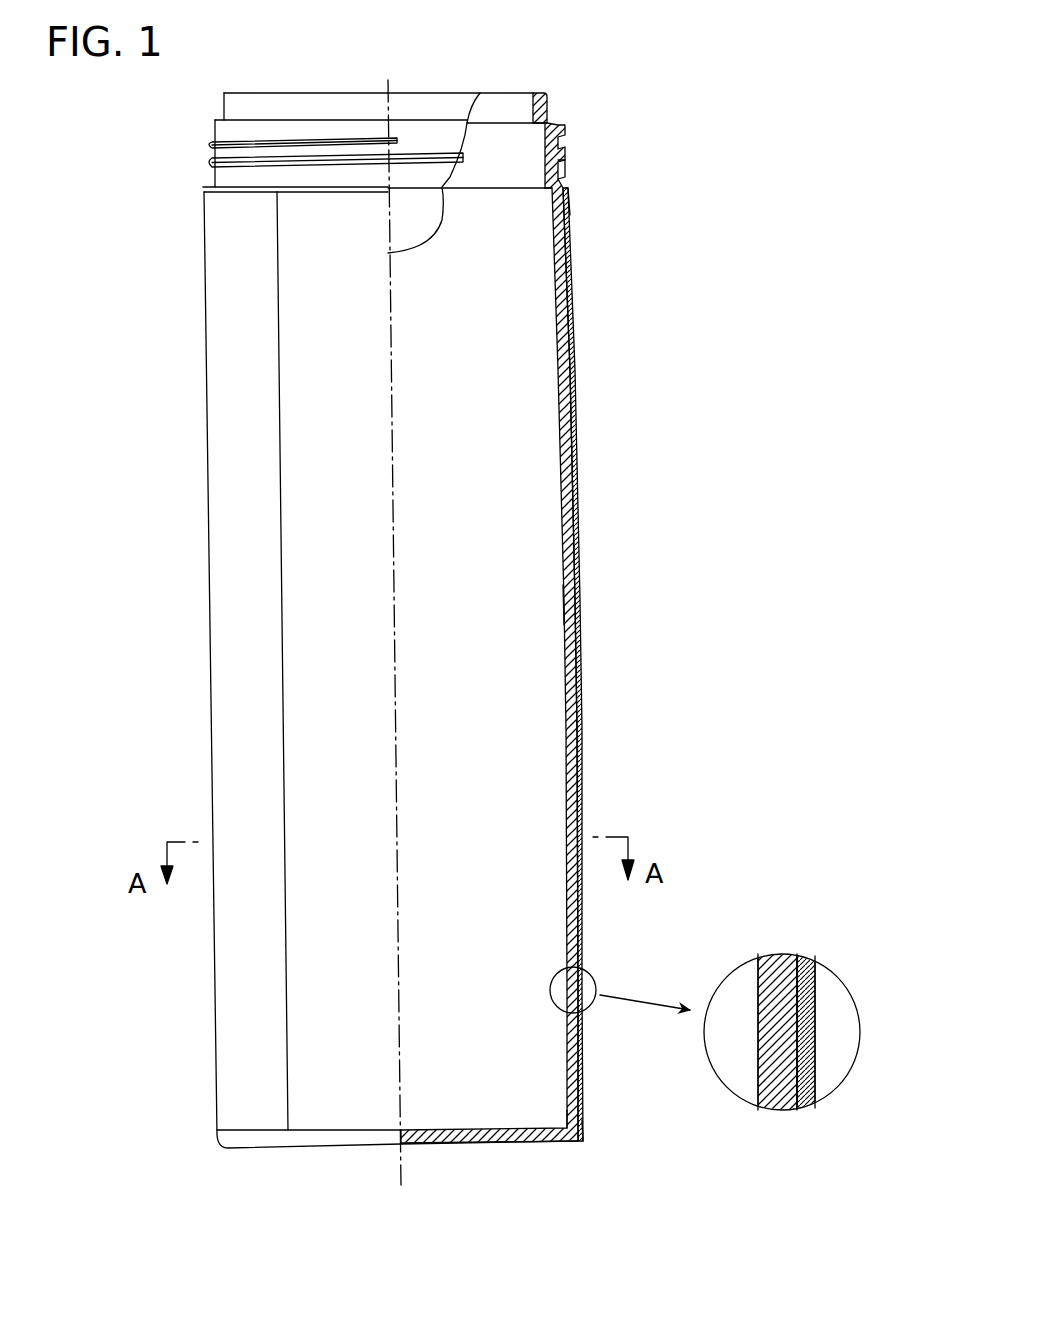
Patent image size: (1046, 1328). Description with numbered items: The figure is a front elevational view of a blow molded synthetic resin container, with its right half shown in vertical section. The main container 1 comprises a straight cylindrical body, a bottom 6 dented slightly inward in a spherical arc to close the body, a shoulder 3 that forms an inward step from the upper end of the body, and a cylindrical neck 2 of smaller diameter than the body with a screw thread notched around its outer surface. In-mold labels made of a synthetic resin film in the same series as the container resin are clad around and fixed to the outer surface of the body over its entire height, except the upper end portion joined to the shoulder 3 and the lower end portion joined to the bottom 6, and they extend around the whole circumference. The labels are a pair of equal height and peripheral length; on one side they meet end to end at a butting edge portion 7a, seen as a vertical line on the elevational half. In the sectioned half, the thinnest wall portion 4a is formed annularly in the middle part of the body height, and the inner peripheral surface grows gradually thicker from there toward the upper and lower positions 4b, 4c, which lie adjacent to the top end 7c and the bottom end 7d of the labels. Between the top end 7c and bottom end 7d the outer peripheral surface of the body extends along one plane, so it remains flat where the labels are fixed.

The main container 1 is at (426, 657).
The neck 2 is at (560, 130).
The shoulder 3 is at (208, 187).
The thinnest wall portion 4a is at (568, 596).
The position of the body adjacent to the top end of the labels 4b is at (569, 185).
The position of the body adjacent to the bottom end of the labels 4c is at (584, 1124).
The bottom 6 is at (457, 1143).
The butting edge portion 7a is at (282, 736).
The top end of the in-mold labels 7c is at (574, 193).
The bottom end of the in-mold labels 7d is at (584, 1118).